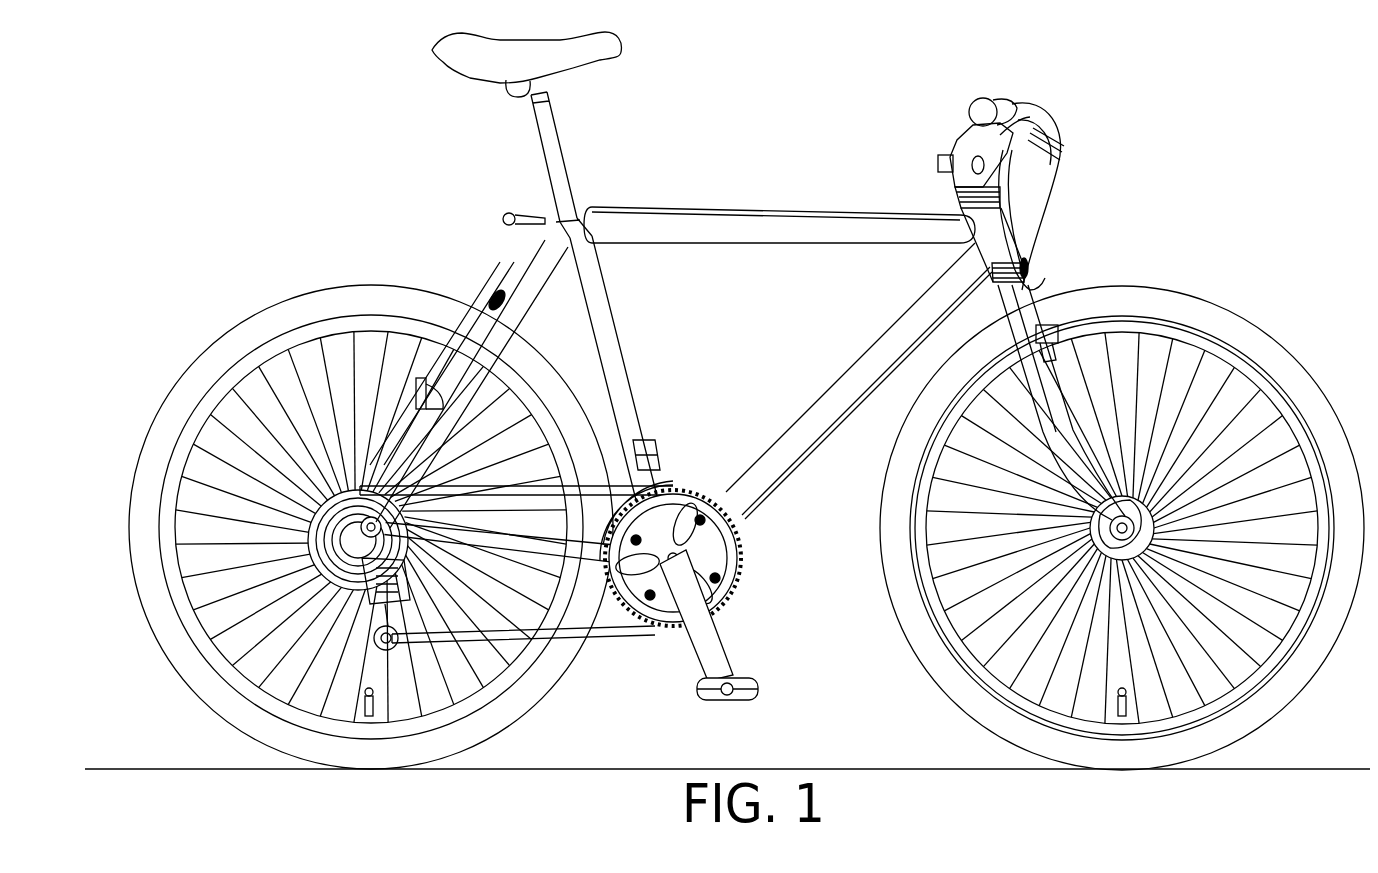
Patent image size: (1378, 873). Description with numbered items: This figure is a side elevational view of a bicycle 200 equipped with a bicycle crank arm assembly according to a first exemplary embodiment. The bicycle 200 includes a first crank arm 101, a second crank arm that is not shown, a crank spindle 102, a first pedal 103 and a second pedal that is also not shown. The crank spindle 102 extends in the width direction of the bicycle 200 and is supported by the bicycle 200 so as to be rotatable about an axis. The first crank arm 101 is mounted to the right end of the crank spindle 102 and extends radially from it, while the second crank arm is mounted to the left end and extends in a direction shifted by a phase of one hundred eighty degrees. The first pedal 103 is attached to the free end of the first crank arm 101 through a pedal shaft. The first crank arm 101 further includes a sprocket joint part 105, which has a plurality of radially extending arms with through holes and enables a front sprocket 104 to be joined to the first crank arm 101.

The bicycle 200 is at (810, 118).
The first crank arm 101 is at (757, 540).
The crank spindle 102 is at (623, 635).
The first pedal 103 is at (759, 688).
The front sprocket 104 is at (742, 588).
The sprocket joint part 105 is at (677, 480).